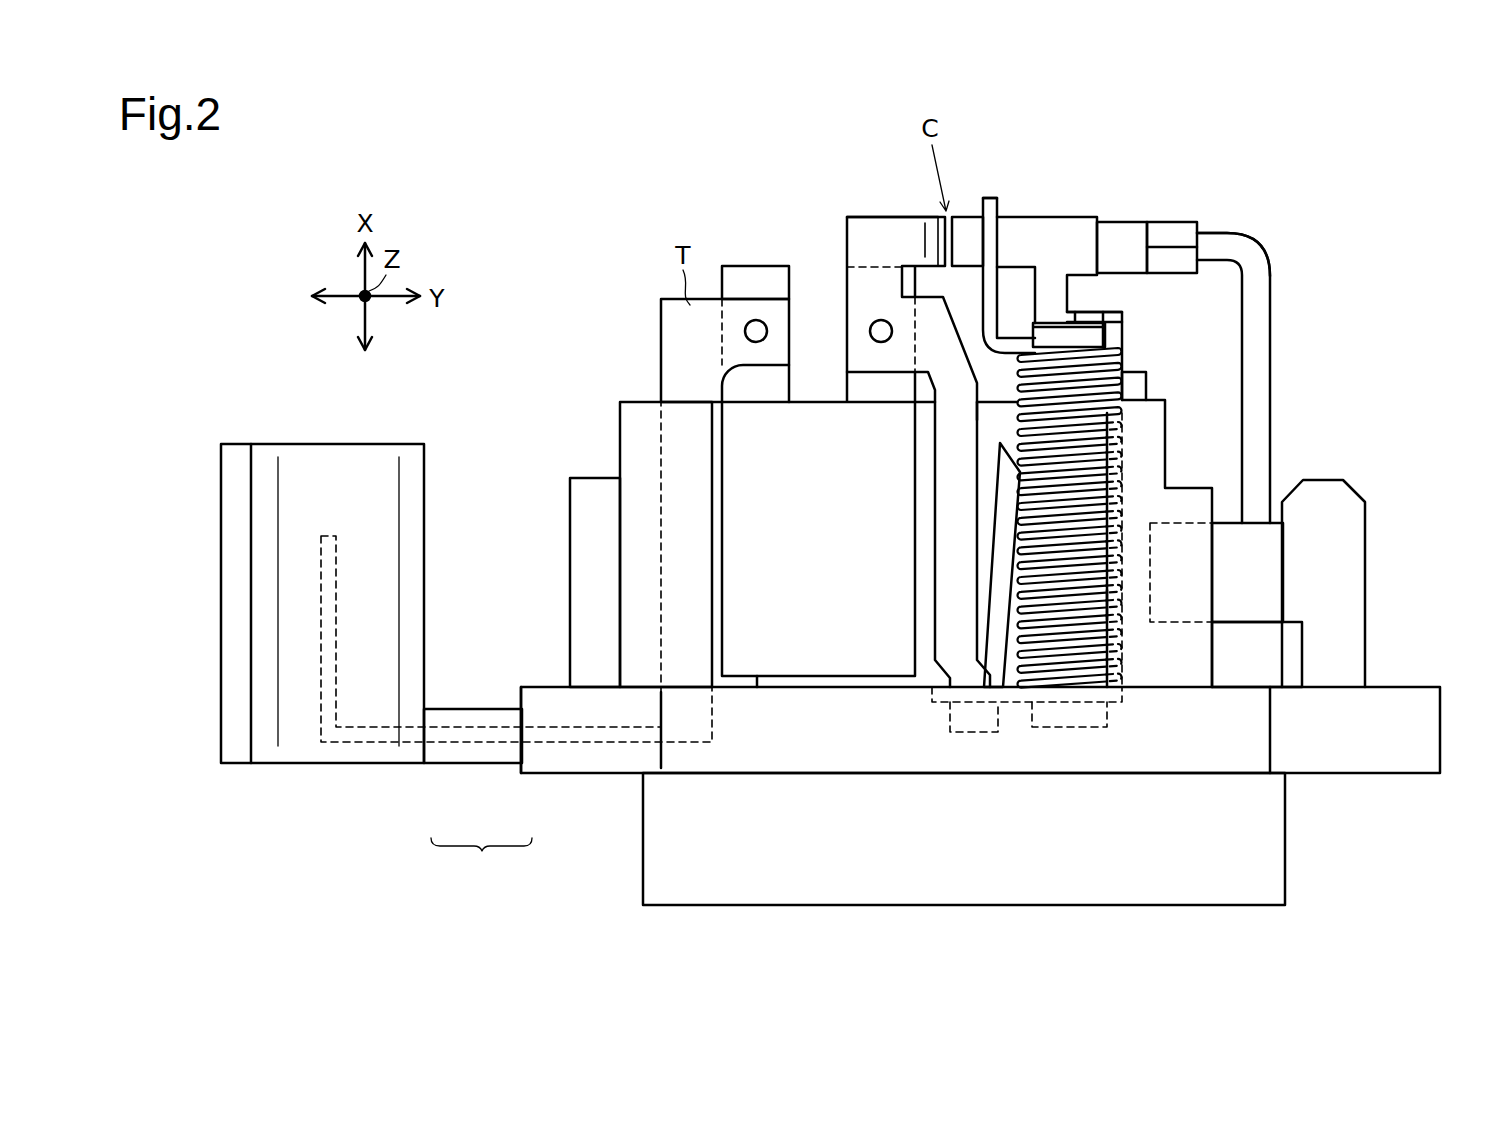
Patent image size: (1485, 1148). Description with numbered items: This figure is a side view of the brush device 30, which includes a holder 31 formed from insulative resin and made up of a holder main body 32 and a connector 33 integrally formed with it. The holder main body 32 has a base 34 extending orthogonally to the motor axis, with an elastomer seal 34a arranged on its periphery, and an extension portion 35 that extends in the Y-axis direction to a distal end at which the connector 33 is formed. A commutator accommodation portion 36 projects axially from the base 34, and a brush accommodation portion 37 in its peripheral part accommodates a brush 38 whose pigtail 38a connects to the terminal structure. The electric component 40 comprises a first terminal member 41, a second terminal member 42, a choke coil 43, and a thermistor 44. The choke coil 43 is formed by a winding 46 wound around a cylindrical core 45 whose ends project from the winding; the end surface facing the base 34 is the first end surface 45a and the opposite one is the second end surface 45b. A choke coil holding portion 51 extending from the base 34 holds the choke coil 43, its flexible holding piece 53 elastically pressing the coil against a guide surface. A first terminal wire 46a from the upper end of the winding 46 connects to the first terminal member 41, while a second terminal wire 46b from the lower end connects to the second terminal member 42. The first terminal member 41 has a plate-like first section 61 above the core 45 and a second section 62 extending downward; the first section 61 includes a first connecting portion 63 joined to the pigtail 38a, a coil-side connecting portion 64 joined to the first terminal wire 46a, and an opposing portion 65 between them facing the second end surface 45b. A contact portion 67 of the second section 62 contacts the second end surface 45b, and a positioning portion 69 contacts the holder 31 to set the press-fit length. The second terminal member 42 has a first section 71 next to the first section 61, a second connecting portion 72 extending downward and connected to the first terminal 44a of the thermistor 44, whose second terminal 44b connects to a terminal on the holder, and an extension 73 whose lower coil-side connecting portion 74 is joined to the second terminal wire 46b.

The brush device 30 is at (1405, 278).
The holder 31 is at (481, 861).
The holder main body 32 is at (543, 773).
The connector 33 is at (391, 763).
The base 34 is at (964, 839).
The seal 34a is at (752, 750).
The extension portion 35 is at (469, 709).
The commutator accommodation portion 36 is at (925, 543).
The brush accommodation portion 37 is at (1250, 615).
The brush 38 is at (1270, 560).
The pigtail 38a is at (1258, 363).
The electric component 40 is at (1255, 232).
The first terminal member 41 is at (1120, 222).
The second terminal member 42 is at (893, 213).
The choke coil 43 is at (1017, 420).
The thermistor 44 is at (732, 520).
The first terminal 44a is at (853, 388).
The second terminal 44b is at (757, 277).
The core 45 is at (1103, 335).
The first end surface 45a is at (1067, 727).
The second end surface 45b is at (1057, 323).
The winding 46 is at (1083, 481).
The first terminal wire 46a is at (988, 197).
The second terminal wire 46b is at (942, 707).
The choke coil holding portion 51 is at (1110, 592).
The holding piece 53 is at (1005, 478).
The first section 61 is at (1008, 218).
The second section 62 is at (1033, 290).
The first connecting portion 63 is at (1172, 222).
The coil-side connecting portion 64 is at (964, 222).
The opposing portion 65 is at (1076, 228).
The contact portion 67 is at (1088, 303).
The positioning portion 69 is at (1148, 385).
The first section 71 is at (860, 222).
The second connecting portion 72 is at (860, 292).
The extension 73 is at (952, 602).
The coil-side connecting portion 74 is at (1000, 705).